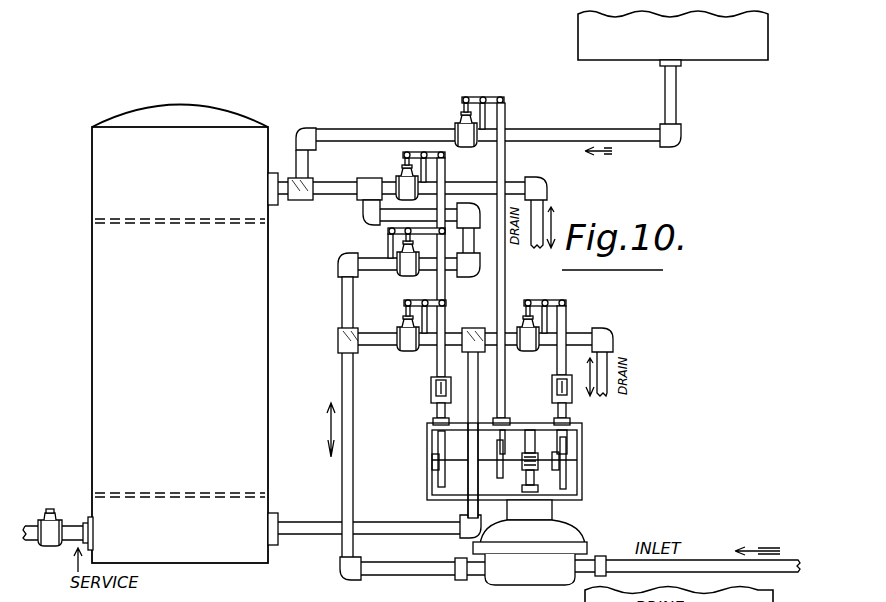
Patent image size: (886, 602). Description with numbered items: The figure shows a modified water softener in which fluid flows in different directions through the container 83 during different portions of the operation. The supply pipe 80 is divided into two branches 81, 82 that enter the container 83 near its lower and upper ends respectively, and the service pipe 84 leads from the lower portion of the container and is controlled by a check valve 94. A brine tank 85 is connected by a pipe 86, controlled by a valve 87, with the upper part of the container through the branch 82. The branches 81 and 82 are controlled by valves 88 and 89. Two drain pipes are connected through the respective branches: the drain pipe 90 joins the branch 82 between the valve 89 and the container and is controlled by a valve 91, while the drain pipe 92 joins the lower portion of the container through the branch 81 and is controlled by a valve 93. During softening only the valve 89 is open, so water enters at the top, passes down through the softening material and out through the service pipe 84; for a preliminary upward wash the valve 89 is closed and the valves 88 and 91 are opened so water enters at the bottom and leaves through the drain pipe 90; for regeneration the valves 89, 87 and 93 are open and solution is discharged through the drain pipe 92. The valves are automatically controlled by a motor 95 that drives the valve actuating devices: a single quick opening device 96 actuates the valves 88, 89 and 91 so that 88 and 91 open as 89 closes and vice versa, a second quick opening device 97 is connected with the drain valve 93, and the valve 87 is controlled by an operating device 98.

The supply pipe 80 is at (415, 560).
The branch of the supply pipe 81 is at (368, 528).
The branch of the supply pipe 82 is at (347, 265).
The container 83 is at (110, 333).
The service pipe 84 is at (72, 527).
The brine tank 85 is at (720, 48).
The pipe 86 is at (630, 115).
The valve 87 is at (454, 122).
The valve 88 is at (416, 352).
The valve 89 is at (408, 270).
The drain pipe 90 is at (487, 170).
The valve 91 is at (403, 187).
The drain pipe 92 is at (578, 337).
The valve 93 is at (538, 346).
The check valve 94 is at (40, 519).
The motor 95 is at (548, 537).
The quick opening device 96 is at (433, 398).
The quick opening device 97 is at (570, 402).
The operating device 98 is at (500, 432).